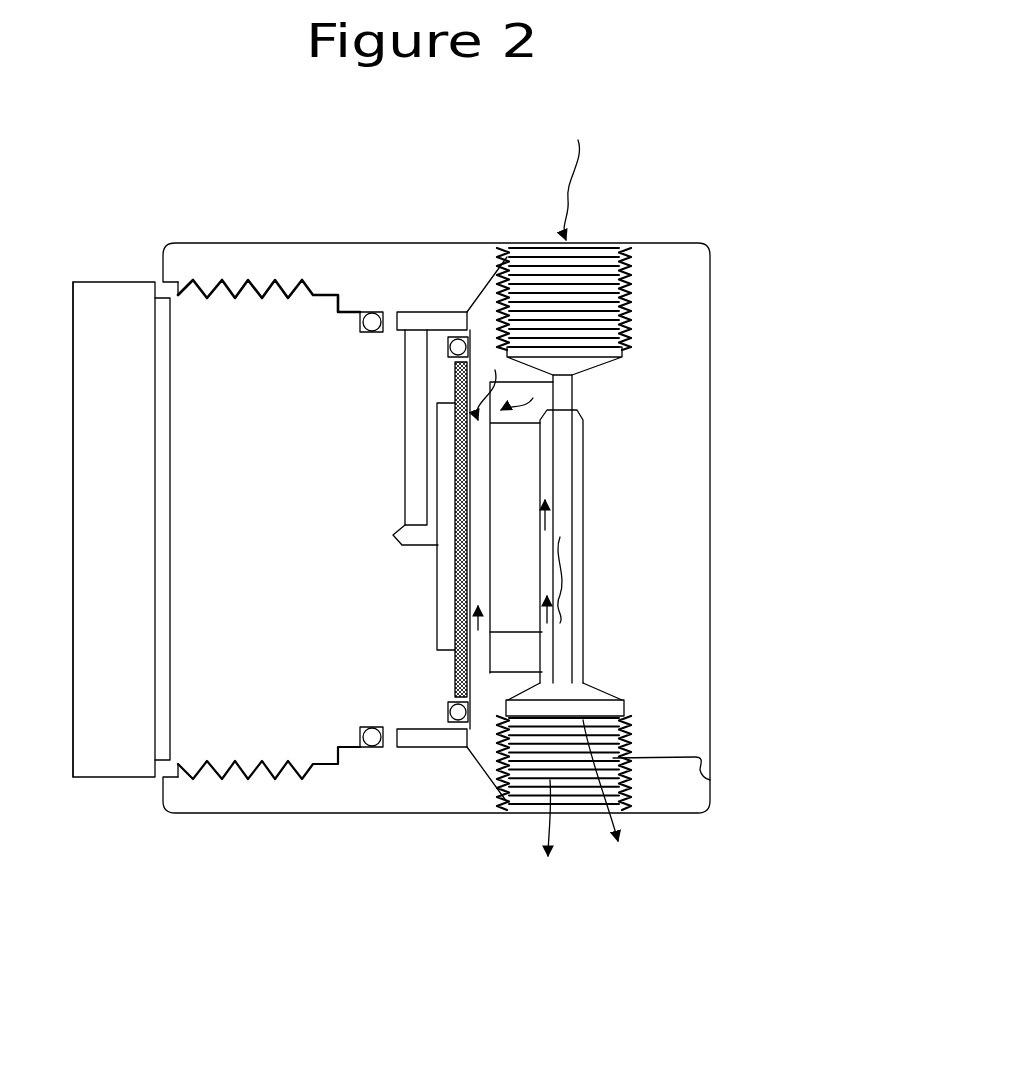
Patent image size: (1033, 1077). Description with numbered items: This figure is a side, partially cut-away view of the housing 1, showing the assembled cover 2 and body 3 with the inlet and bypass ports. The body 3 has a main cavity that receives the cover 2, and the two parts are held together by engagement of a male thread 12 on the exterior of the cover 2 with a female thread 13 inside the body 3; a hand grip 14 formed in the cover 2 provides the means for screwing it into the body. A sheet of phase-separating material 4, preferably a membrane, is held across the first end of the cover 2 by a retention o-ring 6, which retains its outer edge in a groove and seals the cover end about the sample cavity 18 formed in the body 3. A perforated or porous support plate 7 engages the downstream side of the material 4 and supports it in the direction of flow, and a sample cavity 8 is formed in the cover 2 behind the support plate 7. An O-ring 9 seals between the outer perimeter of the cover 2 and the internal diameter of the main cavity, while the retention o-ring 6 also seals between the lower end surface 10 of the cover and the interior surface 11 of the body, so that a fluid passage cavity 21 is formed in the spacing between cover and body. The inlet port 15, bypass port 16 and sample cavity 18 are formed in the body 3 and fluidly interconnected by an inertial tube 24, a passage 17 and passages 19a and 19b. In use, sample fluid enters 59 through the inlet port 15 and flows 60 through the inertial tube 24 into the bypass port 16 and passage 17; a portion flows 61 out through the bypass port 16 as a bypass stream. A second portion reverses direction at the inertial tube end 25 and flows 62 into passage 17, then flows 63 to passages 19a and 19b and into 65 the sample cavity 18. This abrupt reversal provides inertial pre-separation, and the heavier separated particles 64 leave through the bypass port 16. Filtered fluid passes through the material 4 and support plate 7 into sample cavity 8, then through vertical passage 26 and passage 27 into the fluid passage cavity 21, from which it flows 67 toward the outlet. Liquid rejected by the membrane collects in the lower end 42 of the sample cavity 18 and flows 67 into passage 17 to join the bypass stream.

The housing 1 is at (452, 516).
The cover 2 is at (67, 512).
The body 3 is at (730, 528).
The sheet of phase-separating material 4 is at (575, 620).
The retention o-ring 6 is at (470, 340).
The support plate 7 is at (455, 633).
The sample cavity 8 is at (447, 447).
The O-ring 9 is at (372, 313).
The lower end surface 10 is at (467, 330).
The interior surface 11 is at (466, 345).
The male thread 12 is at (180, 292).
The female thread 13 is at (283, 298).
The hand grip 14 is at (108, 282).
The inlet port 15 is at (570, 245).
The bypass port 16 is at (575, 808).
The passage 17 is at (585, 532).
The sample cavity 18 is at (480, 470).
The passage 19a is at (530, 395).
The passage 19b is at (603, 687).
The fluid passage cavity 21 is at (427, 320).
The inertial tube 24 is at (562, 503).
The inertial tube end 25 is at (583, 633).
The vertical passage 26 is at (407, 535).
The passage 27 is at (413, 423).
The lower end 42 is at (483, 680).
The incoming fluid flow 59 is at (578, 175).
The fluid flow through inertial tube 60 is at (565, 588).
The bypass flow 61 is at (540, 830).
The flow into passage 62 is at (545, 530).
The flow to passages 63 is at (523, 410).
The separated particles 64 is at (572, 645).
The flow into sample cavity 65 is at (436, 488).
The outflow 67 is at (710, 780).